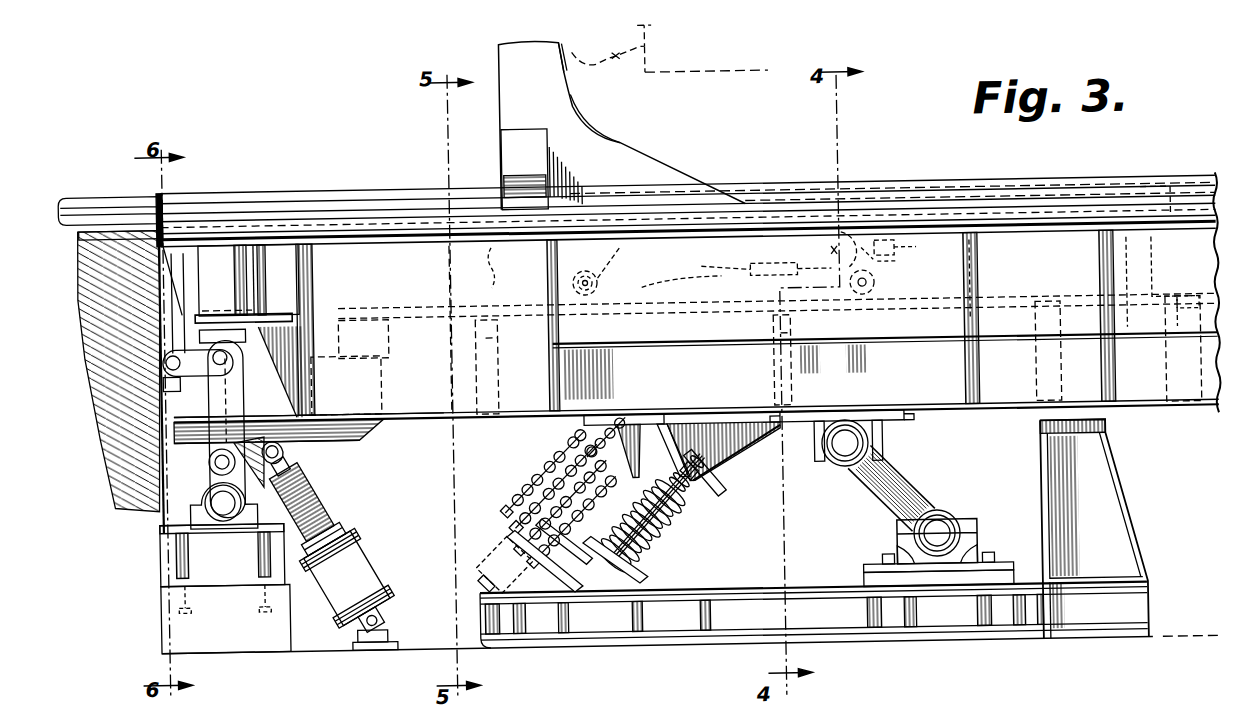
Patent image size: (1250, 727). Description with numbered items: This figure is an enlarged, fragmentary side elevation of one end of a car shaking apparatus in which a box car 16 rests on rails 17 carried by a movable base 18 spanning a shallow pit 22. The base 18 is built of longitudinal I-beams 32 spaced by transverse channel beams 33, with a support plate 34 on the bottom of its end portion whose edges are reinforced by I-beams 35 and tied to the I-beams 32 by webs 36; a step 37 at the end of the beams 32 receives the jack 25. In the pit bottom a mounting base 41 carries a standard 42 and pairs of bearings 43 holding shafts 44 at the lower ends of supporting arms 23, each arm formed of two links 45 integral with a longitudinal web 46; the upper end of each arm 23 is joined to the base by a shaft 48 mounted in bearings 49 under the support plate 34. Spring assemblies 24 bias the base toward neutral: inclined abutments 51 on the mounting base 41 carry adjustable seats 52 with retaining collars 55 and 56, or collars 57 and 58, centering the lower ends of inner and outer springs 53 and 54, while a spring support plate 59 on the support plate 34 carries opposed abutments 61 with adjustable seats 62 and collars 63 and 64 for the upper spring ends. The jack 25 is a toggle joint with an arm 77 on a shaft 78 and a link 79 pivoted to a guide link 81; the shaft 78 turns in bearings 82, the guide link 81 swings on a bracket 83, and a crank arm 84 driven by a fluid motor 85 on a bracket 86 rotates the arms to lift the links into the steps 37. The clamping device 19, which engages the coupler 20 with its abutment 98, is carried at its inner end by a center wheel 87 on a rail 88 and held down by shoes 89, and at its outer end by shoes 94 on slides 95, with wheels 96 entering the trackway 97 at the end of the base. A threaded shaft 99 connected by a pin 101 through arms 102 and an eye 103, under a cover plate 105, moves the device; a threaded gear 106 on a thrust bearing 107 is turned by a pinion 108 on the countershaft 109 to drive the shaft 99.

The box car 16 is at (707, 86).
The rails 17 is at (639, 284).
The movable base or platform 18 is at (697, 430).
The clamping device 19 is at (621, 124).
The coupler 20 is at (611, 59).
The pit 22 is at (412, 479).
The supporting arm 23 is at (904, 488).
The spring assembly 24 is at (608, 502).
The jack 25 is at (330, 535).
The I-beam 32 is at (309, 427).
The transverse channel beam 33 is at (710, 356).
The support plate 34 is at (623, 400).
The I-beam 35 is at (864, 366).
The web 36 is at (706, 322).
The step 37 is at (229, 285).
The mounting base 41 is at (814, 601).
The standard 42 is at (1101, 528).
The bearing 43 is at (942, 551).
The shaft 44 is at (951, 521).
The link 45 is at (949, 473).
The longitudinal web 46 is at (863, 507).
The shaft 48 is at (871, 443).
The bearing 49 is at (841, 418).
The abutment 51 is at (556, 562).
The axially adjustable seat 52 is at (501, 540).
The inner spring 53 is at (626, 489).
The outer spring 54 is at (614, 497).
The retaining collar 55 is at (587, 517).
The retaining collar 56 is at (566, 551).
The collar 57 is at (673, 572).
The collar 58 is at (659, 607).
The spring support plate 59 is at (723, 428).
The abutment 61 is at (647, 451).
The axially adjustable seat 62 is at (714, 479).
The collar 63 is at (611, 457).
The collar 64 is at (654, 450).
The arm 77 is at (212, 506).
The shaft 78 is at (225, 589).
The link 79 is at (238, 429).
The guide link 81 is at (215, 372).
The bearing 82 is at (121, 384).
The bracket 83 is at (176, 396).
The crank arm 84 is at (278, 462).
The fluid motor 85 is at (388, 554).
The bracket 86 is at (392, 630).
The center wheel 87 is at (884, 281).
The rail 88 is at (681, 279).
The shoe 89 is at (766, 276).
The shoe 94 is at (524, 169).
The slide 95 is at (496, 268).
The wheel 96 is at (605, 270).
The trackway 97 is at (232, 380).
The abutment 98 is at (584, 74).
The threaded shaft 99 is at (980, 279).
The pin 101 is at (816, 250).
The arm 102 is at (896, 261).
The eye 103 is at (909, 247).
The cover plate 105 is at (892, 173).
The gear 106 is at (1163, 184).
The thrust bearing 107 is at (1124, 282).
The pinion 108 is at (1152, 295).
The countershaft 109 is at (1178, 318).